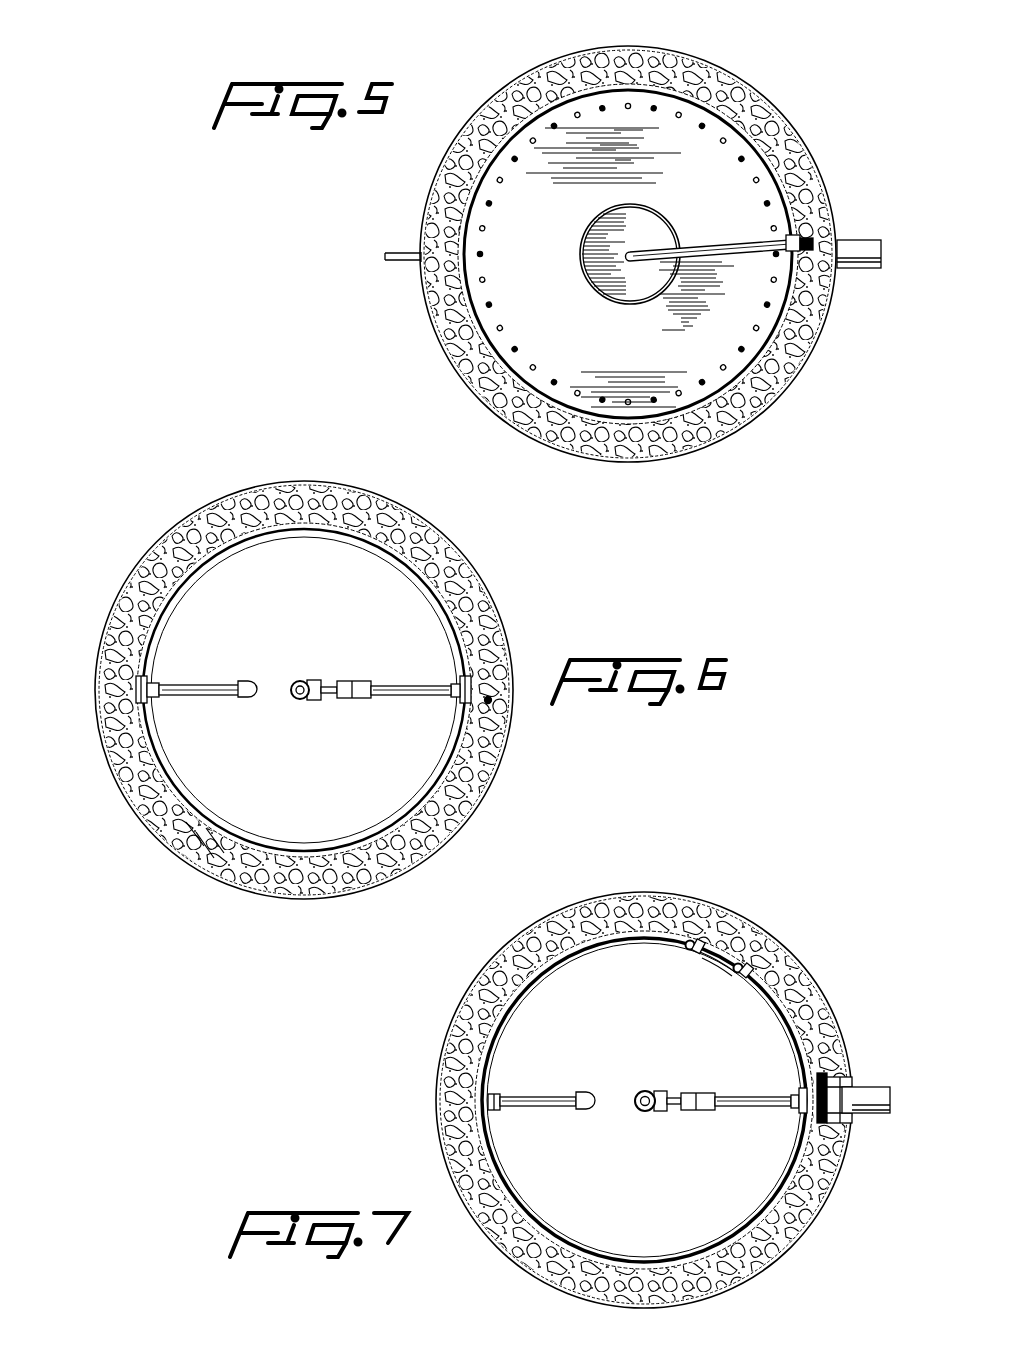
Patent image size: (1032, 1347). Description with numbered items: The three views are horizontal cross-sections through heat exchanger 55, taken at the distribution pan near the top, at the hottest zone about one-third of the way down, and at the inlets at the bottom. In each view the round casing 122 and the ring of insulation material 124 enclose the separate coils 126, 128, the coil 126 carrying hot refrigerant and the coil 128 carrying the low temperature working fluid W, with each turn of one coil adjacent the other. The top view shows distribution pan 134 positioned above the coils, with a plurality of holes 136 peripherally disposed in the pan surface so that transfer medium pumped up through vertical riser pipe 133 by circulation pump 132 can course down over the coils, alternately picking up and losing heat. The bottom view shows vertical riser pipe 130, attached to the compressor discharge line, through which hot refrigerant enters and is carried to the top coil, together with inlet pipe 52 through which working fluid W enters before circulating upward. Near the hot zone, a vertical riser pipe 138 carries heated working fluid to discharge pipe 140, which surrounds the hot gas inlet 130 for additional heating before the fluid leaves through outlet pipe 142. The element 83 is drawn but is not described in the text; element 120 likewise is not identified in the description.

In FIG. 7, the inlet pipe 52 is at (693, 944).
In FIG. 5, the heat exchanger 55 is at (784, 88).
In FIG. 6, the heat exchanger 55 is at (262, 462).
In FIG. 7, the heat exchanger 55 is at (430, 1030).
In FIG. 7, the fastener clip 83 is at (742, 965).
In FIG. 7, the insulation layer 120 is at (792, 1003).
In FIG. 6, the casing 122 is at (452, 562).
In FIG. 7, the casing 122 is at (447, 1072).
In FIG. 6, the insulation material 124 is at (478, 626).
In FIG. 7, the insulation material 124 is at (452, 1130).
In FIG. 6, the coil 126 is at (205, 827).
In FIG. 6, the coil 128 is at (140, 702).
In FIG. 7, the coil 128 is at (540, 1108).
In FIG. 6, the vertical riser pipe 130 is at (293, 702).
In FIG. 7, the vertical riser pipe 130 is at (657, 1110).
In FIG. 5, the circulation pump 132 is at (858, 240).
In FIG. 7, the circulation pump 132 is at (862, 1090).
In FIG. 5, the vertical riser pipe 133 is at (826, 282).
In FIG. 6, the vertical riser pipe 133 is at (492, 698).
In FIG. 5, the distribution pan 134 is at (512, 289).
In FIG. 6, the distribution pan 134 is at (225, 578).
In FIG. 7, the distribution pan 134 is at (765, 1058).
In FIG. 5, the holes 136 is at (655, 82).
In FIG. 6, the holes 136 is at (252, 672).
In FIG. 6, the vertical riser pipe 138 is at (362, 697).
In FIG. 6, the discharge pipe 140 is at (292, 692).
In FIG. 7, the discharge pipe 140 is at (657, 1097).
In FIG. 5, the outlet pipe 142 is at (397, 263).